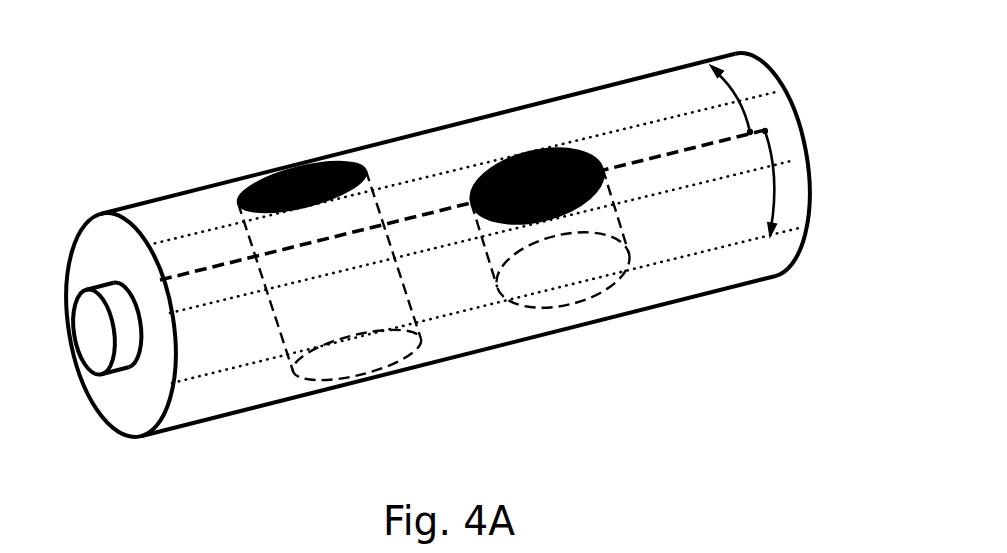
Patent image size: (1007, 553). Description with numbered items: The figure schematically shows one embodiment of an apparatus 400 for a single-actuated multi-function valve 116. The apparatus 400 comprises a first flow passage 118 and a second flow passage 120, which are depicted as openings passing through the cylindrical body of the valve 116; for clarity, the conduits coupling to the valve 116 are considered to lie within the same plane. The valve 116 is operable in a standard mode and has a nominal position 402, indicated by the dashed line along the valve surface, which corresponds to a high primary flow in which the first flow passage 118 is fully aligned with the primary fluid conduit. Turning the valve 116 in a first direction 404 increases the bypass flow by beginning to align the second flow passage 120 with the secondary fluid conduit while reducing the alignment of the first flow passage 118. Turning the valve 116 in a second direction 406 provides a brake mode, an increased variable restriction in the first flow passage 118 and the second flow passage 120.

The apparatus 400 is at (104, 46).
The single-actuated multi-function valve 116 is at (450, 126).
The first flow passage 118 is at (282, 339).
The second flow passage 120 is at (493, 267).
The nominal position 402 is at (787, 125).
The first direction 404 is at (732, 84).
The second direction 406 is at (775, 210).